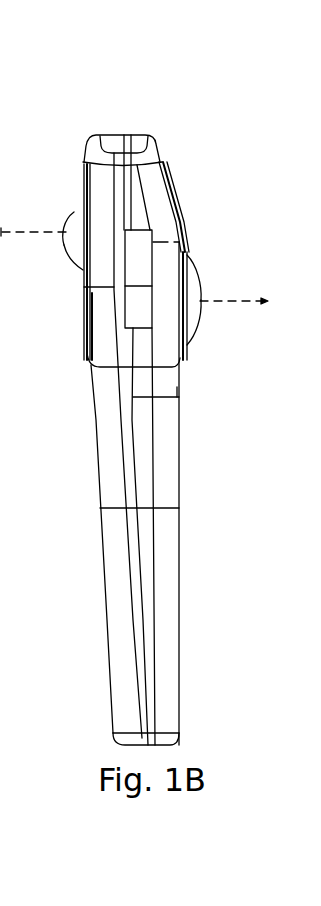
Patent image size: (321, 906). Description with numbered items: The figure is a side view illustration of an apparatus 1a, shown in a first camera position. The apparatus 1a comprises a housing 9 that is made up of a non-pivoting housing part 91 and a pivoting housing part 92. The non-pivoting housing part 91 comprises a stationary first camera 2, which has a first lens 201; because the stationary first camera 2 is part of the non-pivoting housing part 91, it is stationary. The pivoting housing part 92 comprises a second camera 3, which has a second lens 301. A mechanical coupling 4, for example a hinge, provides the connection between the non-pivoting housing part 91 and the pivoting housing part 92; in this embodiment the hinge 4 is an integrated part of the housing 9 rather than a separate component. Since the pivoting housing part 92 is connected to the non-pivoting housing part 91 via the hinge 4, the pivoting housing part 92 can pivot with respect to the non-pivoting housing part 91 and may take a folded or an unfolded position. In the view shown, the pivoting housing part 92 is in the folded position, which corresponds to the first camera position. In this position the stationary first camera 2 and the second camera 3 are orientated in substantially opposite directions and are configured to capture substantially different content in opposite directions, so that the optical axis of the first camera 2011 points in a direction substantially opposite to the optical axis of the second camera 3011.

The apparatus 1a is at (64, 100).
The housing 9 is at (103, 95).
The non-pivoting housing part 91 is at (110, 148).
The stationary first camera 2 is at (68, 258).
The first lens 201 is at (72, 212).
The optical axis of the first camera 2011 is at (35, 236).
The second camera 3 is at (199, 322).
The second lens 301 is at (193, 278).
The optical axis of the second camera 3011 is at (248, 305).
The mechanical coupling 4 is at (116, 321).
The pivoting housing part 92 is at (168, 306).